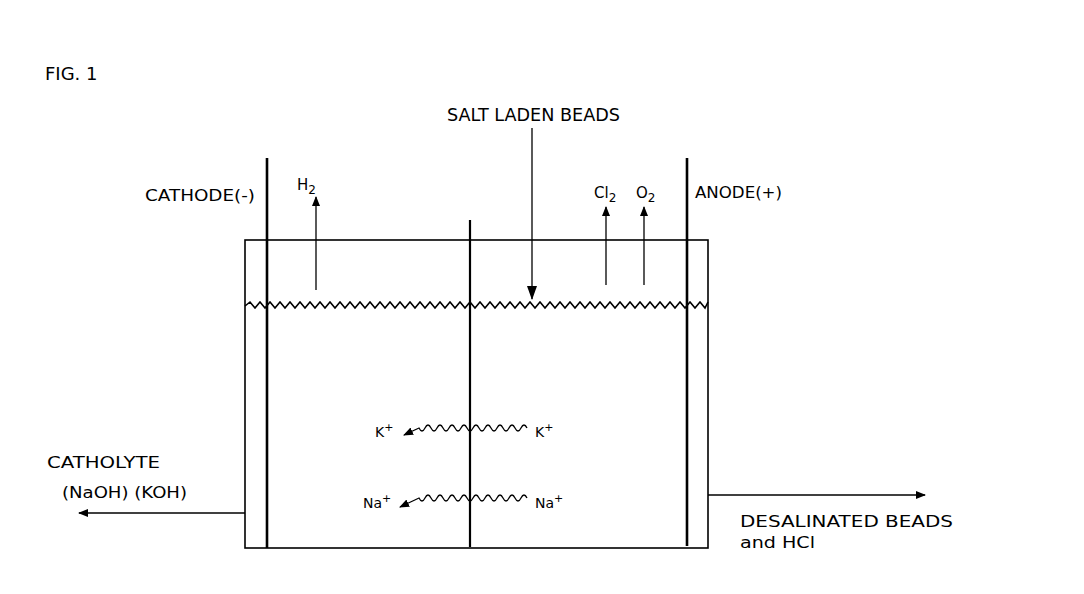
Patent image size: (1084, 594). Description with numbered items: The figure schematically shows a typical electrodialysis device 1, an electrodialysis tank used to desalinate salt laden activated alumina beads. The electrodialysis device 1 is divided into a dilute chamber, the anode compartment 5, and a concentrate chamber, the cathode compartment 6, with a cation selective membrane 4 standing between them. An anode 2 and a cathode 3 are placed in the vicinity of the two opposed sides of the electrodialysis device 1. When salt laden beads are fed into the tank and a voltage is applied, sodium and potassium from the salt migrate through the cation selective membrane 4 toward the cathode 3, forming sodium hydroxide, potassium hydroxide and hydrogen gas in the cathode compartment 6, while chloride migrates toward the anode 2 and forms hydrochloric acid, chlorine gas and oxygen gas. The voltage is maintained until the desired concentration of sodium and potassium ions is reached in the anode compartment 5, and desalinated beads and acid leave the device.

The electrodialysis device 1 is at (205, 324).
The anode 2 is at (688, 227).
The cathode 3 is at (266, 222).
The cation selective membrane 4 is at (471, 280).
The anode compartment 5 is at (340, 370).
The cathode compartment 6 is at (586, 370).